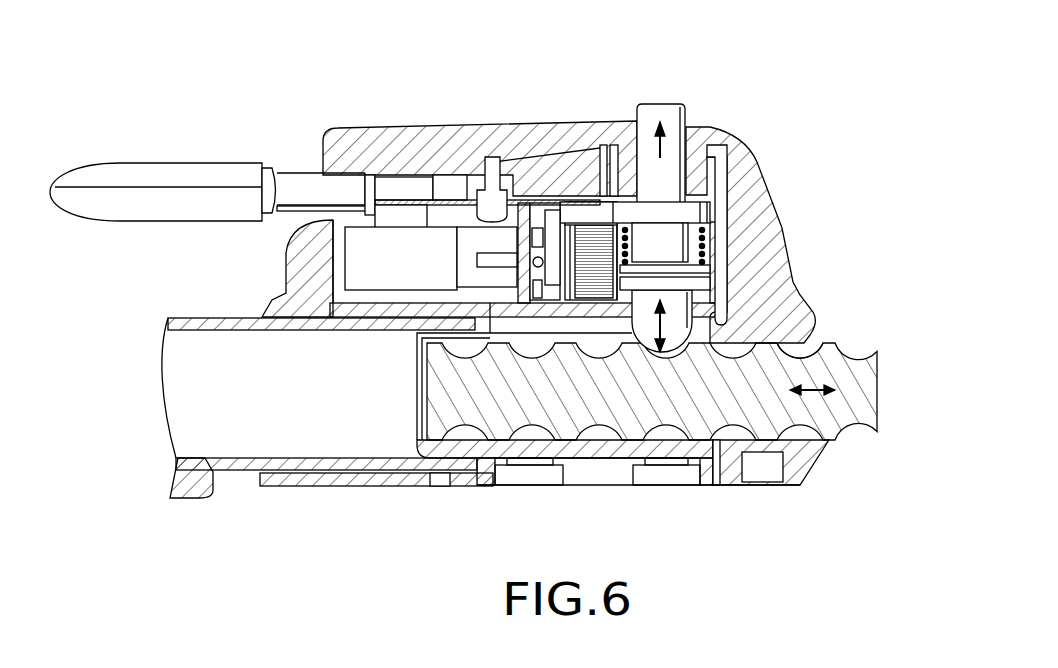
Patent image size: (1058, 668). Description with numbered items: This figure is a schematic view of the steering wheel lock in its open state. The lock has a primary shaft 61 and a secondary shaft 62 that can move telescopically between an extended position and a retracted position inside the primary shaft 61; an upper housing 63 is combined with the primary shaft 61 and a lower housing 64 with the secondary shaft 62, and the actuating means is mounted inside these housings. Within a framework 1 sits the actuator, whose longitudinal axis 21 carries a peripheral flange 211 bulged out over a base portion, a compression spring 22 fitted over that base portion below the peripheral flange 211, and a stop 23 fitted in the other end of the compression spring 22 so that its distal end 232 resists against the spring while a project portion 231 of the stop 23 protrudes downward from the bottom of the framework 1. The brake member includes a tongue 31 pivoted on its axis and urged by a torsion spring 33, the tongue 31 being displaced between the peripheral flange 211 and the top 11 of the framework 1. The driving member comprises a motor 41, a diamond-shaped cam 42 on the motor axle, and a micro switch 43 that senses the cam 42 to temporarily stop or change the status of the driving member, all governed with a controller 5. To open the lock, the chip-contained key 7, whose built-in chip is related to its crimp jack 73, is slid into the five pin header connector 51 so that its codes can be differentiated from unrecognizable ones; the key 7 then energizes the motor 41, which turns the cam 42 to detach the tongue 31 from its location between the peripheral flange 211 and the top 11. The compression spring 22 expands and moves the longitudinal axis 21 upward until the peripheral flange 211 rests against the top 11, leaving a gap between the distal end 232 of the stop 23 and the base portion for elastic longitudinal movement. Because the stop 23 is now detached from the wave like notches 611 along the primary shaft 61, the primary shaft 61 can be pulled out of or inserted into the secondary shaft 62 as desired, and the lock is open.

The framework 1 is at (712, 214).
The controller 5 is at (465, 190).
The chip-contained key 7 is at (180, 170).
The top 11 is at (607, 205).
The longitudinal axis 21 is at (660, 120).
The compression spring 22 is at (752, 236).
The stop 23 is at (718, 322).
The tongue 31 is at (593, 207).
The torsion spring 33 is at (578, 227).
The motor 41 is at (358, 275).
The cam 42 is at (547, 220).
The micro switch 43 is at (489, 186).
The five pin header connector 51 is at (410, 187).
The primary shaft 61 is at (862, 398).
The secondary shaft 62 is at (207, 320).
The upper housing 63 is at (352, 128).
The lower housing 64 is at (463, 487).
The crimp jack 73 is at (373, 153).
The peripheral flange 211 is at (718, 168).
The project portion 231 is at (727, 432).
The distal end 232 is at (700, 292).
The wave like notches 611 is at (798, 343).